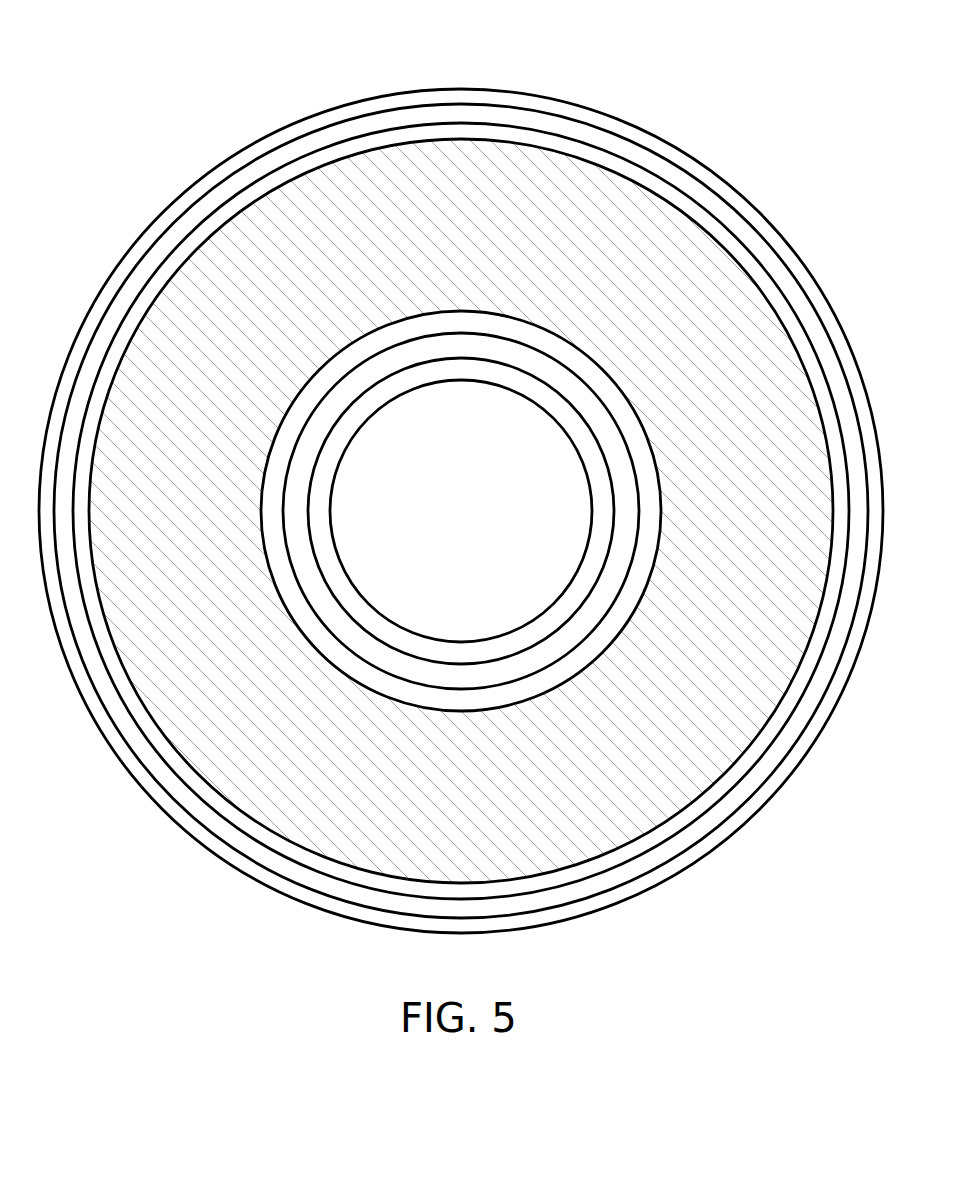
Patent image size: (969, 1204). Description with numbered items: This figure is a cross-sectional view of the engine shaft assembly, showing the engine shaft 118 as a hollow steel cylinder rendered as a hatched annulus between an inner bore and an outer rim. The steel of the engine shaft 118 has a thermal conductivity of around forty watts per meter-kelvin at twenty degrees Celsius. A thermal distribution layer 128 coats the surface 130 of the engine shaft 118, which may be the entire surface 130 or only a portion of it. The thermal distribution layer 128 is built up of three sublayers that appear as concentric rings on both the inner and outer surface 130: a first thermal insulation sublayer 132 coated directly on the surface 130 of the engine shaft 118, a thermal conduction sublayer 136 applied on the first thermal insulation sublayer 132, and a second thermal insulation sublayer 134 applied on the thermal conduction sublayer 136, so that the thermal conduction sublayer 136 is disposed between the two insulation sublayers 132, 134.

The engine shaft 118 is at (188, 280).
The thermal distribution layer 128 is at (147, 795).
The surface 130 is at (532, 142).
The first thermal insulation sublayer 132 is at (465, 122).
The second thermal insulation sublayer 134 is at (258, 140).
The thermal conduction sublayer 136 is at (383, 110).